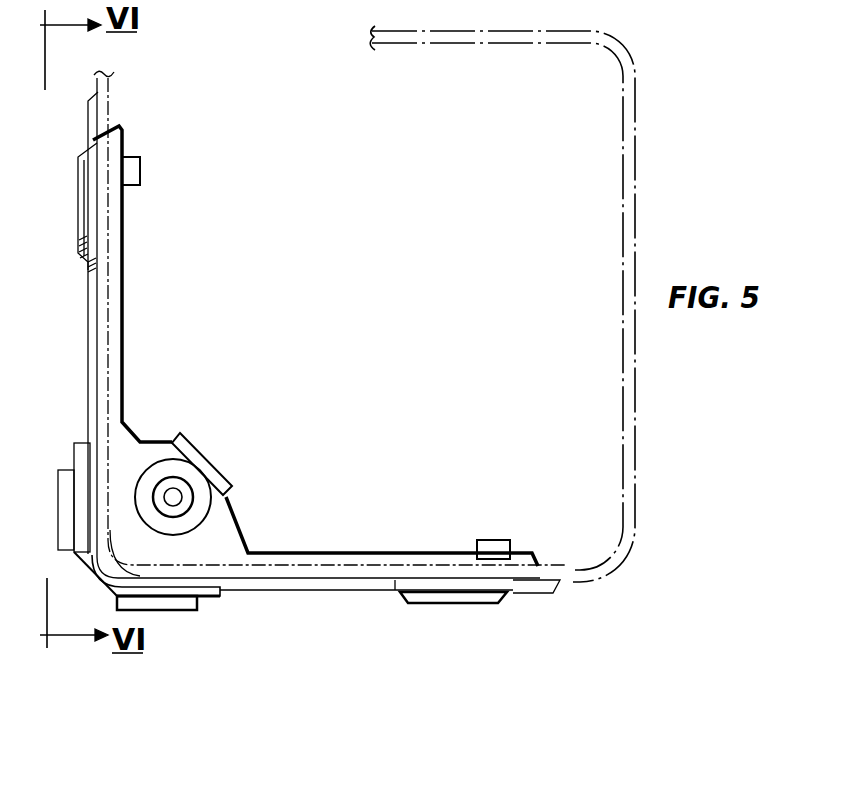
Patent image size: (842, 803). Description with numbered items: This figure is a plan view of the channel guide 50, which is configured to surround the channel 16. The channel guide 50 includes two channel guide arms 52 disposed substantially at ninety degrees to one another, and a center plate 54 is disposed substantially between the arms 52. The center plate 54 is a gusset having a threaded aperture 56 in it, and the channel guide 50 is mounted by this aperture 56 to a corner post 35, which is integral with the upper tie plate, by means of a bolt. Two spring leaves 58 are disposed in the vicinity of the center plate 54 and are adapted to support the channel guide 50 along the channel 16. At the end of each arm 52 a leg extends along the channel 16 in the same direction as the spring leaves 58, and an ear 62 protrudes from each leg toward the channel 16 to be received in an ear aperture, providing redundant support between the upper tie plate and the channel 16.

The channel 16 is at (623, 497).
The corner post 35 is at (186, 490).
The channel guide 50 is at (62, 306).
The channel guide arms 52 is at (92, 355).
The center plate 54 is at (203, 553).
The threaded aperture 56 is at (168, 492).
The spring leaves 58 is at (152, 605).
The ear 62 is at (140, 172).